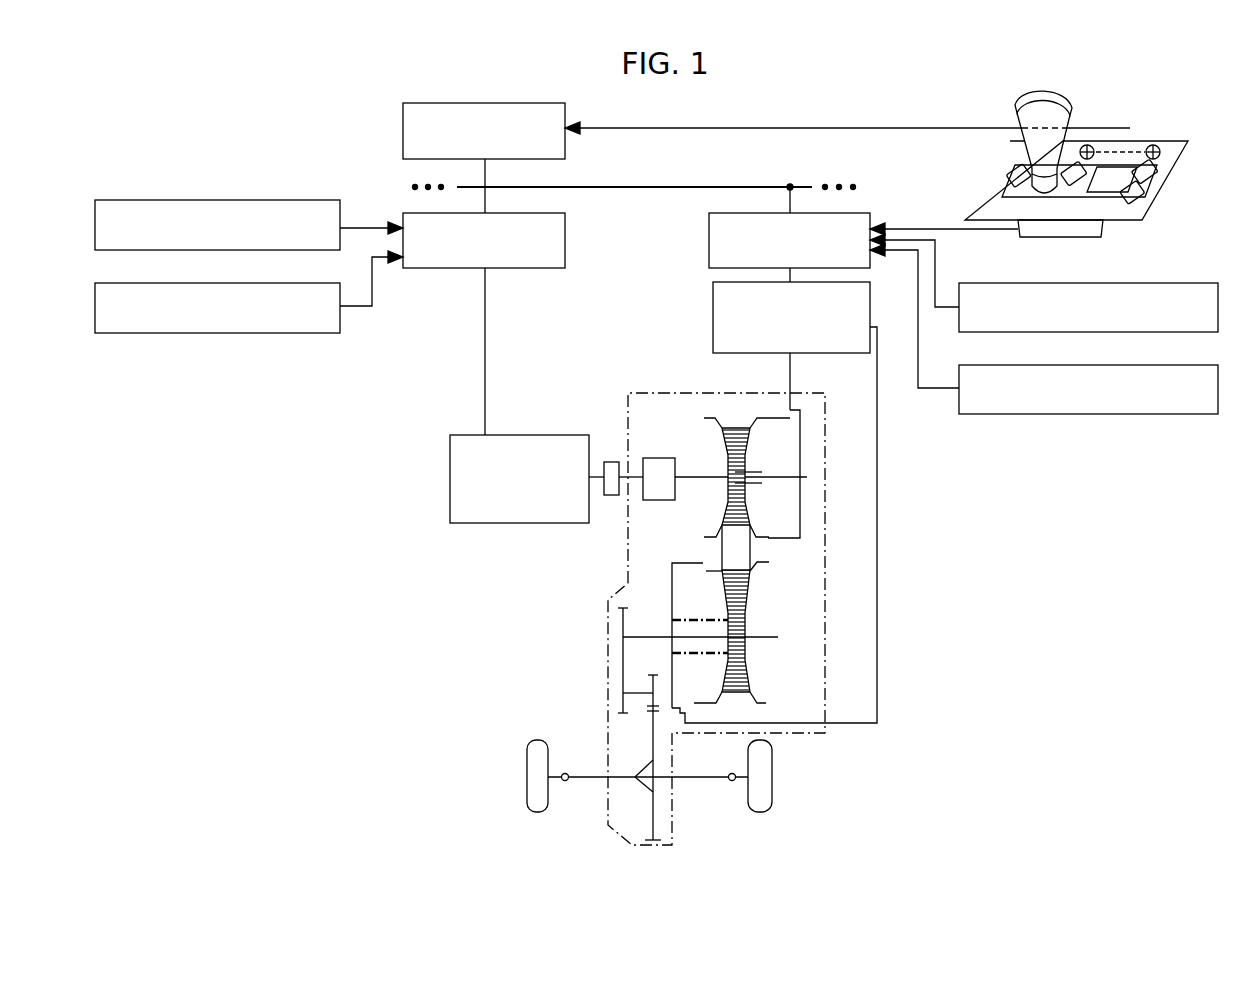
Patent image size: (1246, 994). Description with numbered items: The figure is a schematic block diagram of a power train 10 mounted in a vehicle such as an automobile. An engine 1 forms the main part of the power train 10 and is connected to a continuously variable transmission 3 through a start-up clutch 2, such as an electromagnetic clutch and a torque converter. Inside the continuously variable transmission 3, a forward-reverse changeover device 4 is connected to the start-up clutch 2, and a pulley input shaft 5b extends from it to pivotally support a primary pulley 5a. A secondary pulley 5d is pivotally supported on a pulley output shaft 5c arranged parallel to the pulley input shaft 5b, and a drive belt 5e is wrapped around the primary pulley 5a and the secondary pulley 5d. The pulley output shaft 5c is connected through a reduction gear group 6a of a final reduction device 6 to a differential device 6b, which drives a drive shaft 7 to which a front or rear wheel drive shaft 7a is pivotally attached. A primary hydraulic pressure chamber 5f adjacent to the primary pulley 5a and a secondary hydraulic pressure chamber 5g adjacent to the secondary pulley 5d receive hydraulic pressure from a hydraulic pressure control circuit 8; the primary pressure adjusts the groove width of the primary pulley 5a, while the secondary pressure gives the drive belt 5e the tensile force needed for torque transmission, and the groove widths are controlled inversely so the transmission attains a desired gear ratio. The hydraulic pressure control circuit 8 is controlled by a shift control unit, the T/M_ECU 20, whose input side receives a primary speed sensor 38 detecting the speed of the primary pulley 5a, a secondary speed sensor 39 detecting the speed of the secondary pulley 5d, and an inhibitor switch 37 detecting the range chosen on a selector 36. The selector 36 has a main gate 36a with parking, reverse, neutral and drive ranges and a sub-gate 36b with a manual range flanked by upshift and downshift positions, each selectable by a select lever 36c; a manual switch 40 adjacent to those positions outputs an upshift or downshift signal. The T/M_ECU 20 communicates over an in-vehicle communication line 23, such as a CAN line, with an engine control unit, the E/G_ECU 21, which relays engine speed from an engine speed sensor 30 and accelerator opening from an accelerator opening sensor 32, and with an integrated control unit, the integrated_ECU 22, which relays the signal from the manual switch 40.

The engine 1 is at (450, 478).
The start-up clutch 2 is at (611, 462).
The continuously variable transmission 3 is at (660, 375).
The forward-reverse changeover device 4 is at (658, 458).
The primary pulley 5a is at (716, 420).
The pulley input shaft 5b is at (697, 477).
The pulley output shaft 5c is at (763, 637).
The secondary pulley 5d is at (755, 578).
The drive belt 5e is at (752, 548).
The primary hydraulic pressure chamber 5f is at (790, 437).
The secondary hydraulic pressure chamber 5g is at (683, 572).
The final reduction device 6 is at (552, 697).
The reduction gear group 6a is at (620, 706).
The differential device 6b is at (636, 768).
The drive shaft 7 is at (590, 780).
The wheel drive shaft 7a is at (538, 814).
The hydraulic pressure control circuit 8 is at (713, 318).
The power train 10 is at (416, 614).
The shift control unit (T/M_ECU) 20 is at (709, 224).
The engine control unit (E/G_ECU) 21 is at (565, 222).
The integrated control unit (integrated_ECU) 22 is at (565, 112).
The in-vehicle communication line 23 is at (650, 190).
The engine speed sensor 30 is at (283, 200).
The accelerator opening sensor 32 is at (283, 283).
The selector 36 is at (1165, 190).
The main gate 36a is at (1010, 185).
The sub-gate 36b is at (1118, 172).
The select lever 36c is at (1071, 118).
The inhibitor switch 37 is at (1108, 226).
The primary speed sensor 38 is at (1158, 283).
The secondary speed sensor 39 is at (1158, 365).
The manual switch 40 is at (1138, 150).